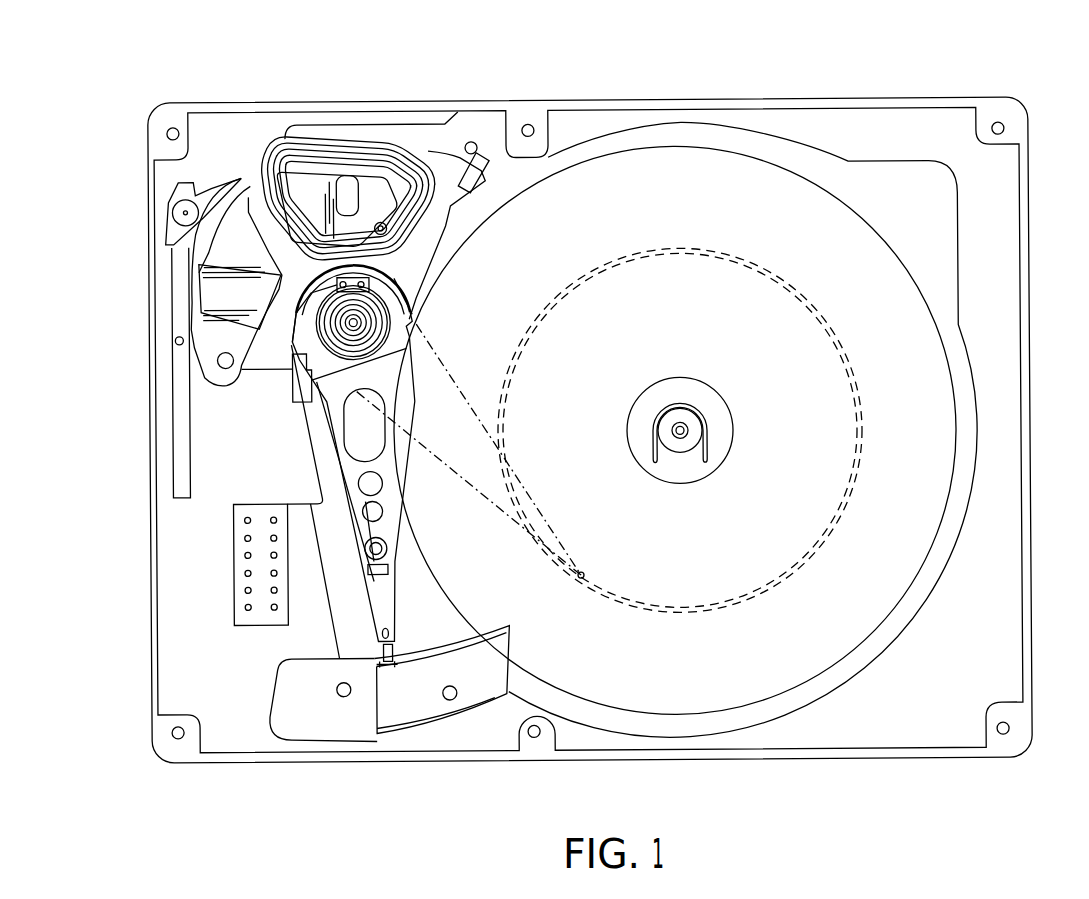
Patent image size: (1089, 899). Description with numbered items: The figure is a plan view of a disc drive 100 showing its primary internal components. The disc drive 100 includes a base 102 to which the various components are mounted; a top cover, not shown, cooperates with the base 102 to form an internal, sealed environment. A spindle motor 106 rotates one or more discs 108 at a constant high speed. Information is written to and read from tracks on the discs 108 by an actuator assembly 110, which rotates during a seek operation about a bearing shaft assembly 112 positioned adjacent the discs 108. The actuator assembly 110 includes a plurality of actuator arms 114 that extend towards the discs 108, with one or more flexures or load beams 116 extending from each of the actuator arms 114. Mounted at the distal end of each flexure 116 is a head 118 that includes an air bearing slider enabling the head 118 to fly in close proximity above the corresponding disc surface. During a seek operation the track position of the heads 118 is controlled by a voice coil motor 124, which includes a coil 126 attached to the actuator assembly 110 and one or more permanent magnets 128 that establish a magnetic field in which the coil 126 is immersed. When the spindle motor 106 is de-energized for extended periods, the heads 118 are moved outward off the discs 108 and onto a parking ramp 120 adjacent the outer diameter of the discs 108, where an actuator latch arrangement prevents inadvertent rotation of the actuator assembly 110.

The disc drive 100 is at (108, 435).
The base 102 is at (898, 120).
The spindle motor 106 is at (735, 428).
The disc 108 is at (893, 280).
The actuator assembly 110 is at (413, 466).
The bearing shaft assembly 112 is at (366, 314).
The actuator arm 114 is at (390, 403).
The flexure 116 is at (385, 585).
The head 118 is at (400, 647).
The parking ramp 120 is at (483, 668).
The voice coil motor 124 is at (435, 133).
The coil 126 is at (383, 141).
The permanent magnet 128 is at (214, 290).